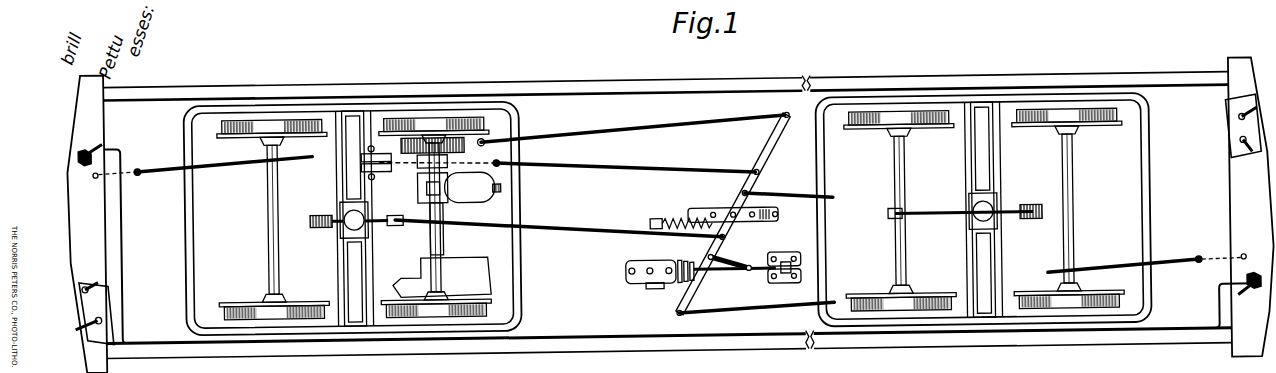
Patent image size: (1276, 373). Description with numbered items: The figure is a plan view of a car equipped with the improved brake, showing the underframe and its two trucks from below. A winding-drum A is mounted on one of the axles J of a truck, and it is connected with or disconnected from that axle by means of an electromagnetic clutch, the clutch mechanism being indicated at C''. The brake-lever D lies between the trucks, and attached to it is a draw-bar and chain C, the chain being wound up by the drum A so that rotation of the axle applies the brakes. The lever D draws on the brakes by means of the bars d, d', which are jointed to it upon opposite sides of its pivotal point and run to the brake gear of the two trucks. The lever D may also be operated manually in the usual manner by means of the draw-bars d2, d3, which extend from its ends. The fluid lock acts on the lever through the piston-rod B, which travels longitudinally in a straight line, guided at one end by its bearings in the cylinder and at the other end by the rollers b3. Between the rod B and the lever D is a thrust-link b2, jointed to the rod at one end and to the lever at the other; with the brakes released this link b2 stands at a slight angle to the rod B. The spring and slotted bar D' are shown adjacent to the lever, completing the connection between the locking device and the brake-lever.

The winding-drum A is at (420, 152).
The clutch mechanism C'' is at (414, 188).
The axle J is at (442, 222).
The brake-lever D is at (733, 213).
The draw-bar d3 is at (631, 123).
The draw-bar and chain C is at (567, 159).
The bar d is at (789, 185).
The bar d' is at (558, 227).
The draw-bar d2 is at (756, 300).
The release spring and slotted bar D' is at (714, 207).
The piston-rod B is at (701, 277).
The thrust-link b2 is at (733, 253).
The rollers b3 is at (785, 286).